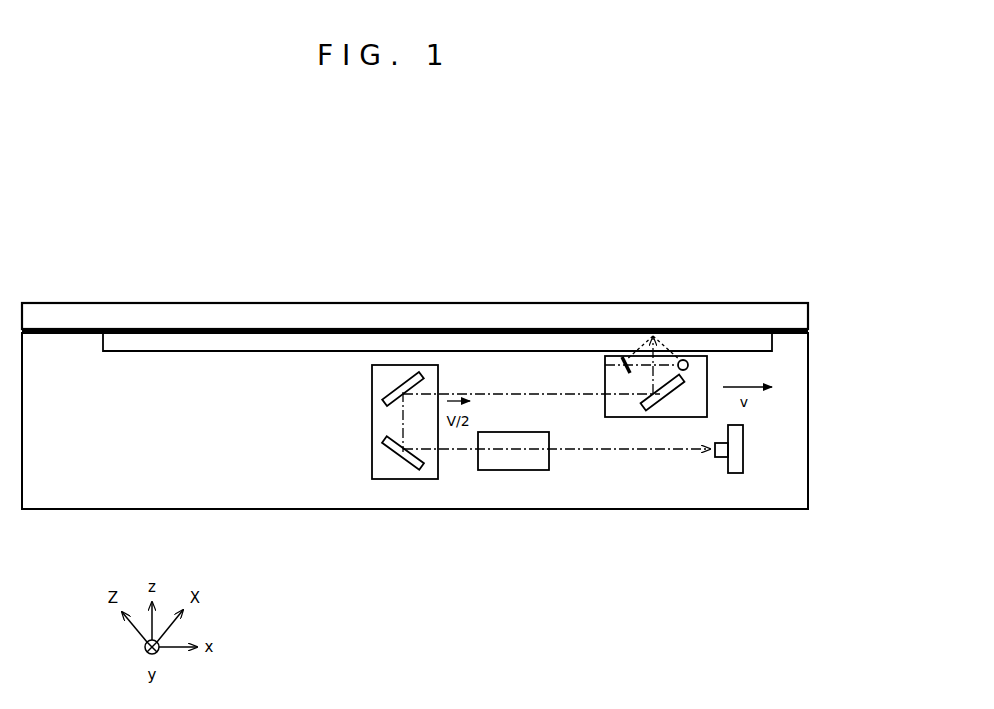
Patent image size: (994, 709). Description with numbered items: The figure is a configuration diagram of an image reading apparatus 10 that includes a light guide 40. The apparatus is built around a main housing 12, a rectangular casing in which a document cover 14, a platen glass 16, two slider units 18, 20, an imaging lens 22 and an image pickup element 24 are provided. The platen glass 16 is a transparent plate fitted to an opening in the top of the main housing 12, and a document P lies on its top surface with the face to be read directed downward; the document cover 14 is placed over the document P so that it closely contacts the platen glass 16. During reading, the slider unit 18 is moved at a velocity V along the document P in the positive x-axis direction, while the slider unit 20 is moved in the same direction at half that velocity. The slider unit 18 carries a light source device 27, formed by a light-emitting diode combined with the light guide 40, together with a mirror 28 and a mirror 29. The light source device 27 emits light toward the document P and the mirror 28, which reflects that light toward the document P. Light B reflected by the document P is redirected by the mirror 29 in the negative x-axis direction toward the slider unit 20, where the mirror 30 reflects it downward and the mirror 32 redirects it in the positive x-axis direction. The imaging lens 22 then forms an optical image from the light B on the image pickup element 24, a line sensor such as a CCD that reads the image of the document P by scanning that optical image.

The image reading apparatus 10 is at (67, 168).
The main housing 12 is at (808, 422).
The document cover 14 is at (518, 303).
The platen glass 16 is at (274, 342).
The slider unit 18 is at (653, 417).
The slider unit 20 is at (438, 375).
The imaging lens 22 is at (514, 470).
The image pickup element 24 is at (734, 473).
The light source device 27 is at (690, 365).
The mirror 28 is at (620, 360).
The mirror 29 is at (648, 407).
The mirror 30 is at (398, 383).
The mirror 32 is at (409, 464).
The light guide 40 is at (686, 359).
The light B is at (668, 350).
The document P is at (494, 329).